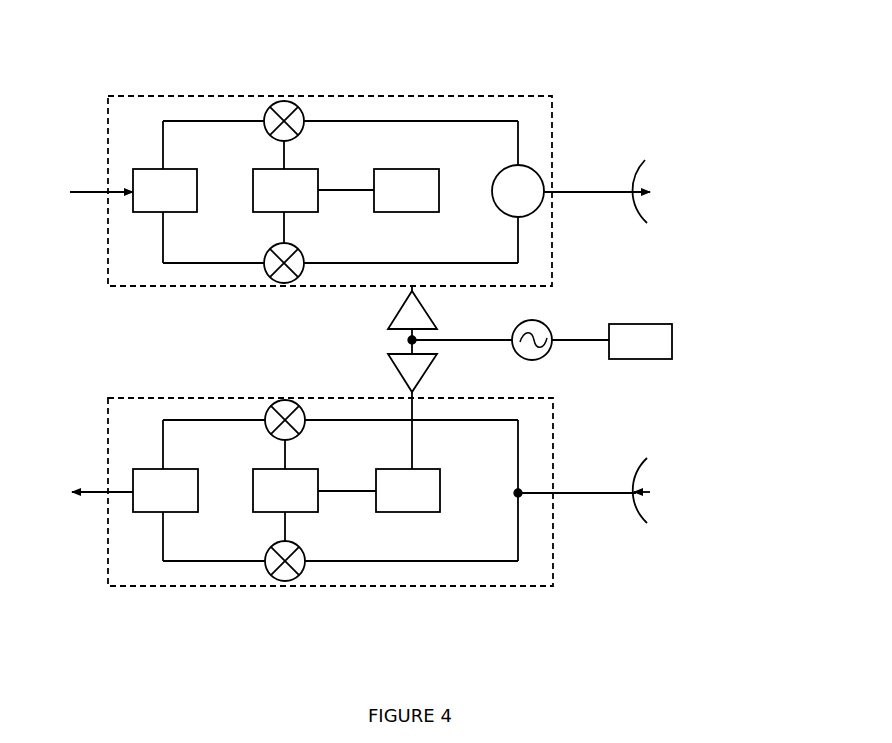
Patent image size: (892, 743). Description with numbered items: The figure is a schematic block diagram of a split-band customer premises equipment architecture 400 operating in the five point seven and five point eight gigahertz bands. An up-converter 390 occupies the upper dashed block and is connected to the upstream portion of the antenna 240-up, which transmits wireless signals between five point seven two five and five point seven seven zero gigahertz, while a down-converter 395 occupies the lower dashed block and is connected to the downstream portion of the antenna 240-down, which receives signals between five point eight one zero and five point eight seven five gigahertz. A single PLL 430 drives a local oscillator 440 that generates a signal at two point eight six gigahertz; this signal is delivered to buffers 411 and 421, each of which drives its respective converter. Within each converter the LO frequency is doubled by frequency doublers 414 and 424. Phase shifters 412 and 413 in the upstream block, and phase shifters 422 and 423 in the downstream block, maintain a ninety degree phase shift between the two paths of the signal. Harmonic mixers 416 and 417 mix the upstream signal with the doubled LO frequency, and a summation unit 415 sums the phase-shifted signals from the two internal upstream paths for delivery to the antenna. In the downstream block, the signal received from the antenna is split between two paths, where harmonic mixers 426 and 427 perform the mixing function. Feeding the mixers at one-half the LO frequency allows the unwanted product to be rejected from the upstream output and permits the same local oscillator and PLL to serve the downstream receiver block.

The transceiver front-end circuit 400 is at (67, 43).
The up-converter 390 is at (151, 96).
The down-converter 395 is at (151, 398).
The buffer 411 is at (400, 310).
The phase shifter 412 is at (176, 169).
The phase shifter 413 is at (304, 170).
The frequency doubler 414 is at (420, 170).
The summation unit 415 is at (508, 215).
The harmonic mixer 416 is at (298, 248).
The harmonic mixer 417 is at (272, 139).
The buffer 421 is at (400, 374).
The phase shifter 422 is at (176, 470).
The phase shifter 423 is at (304, 470).
The frequency doubler 424 is at (420, 470).
The harmonic mixer 426 is at (298, 547).
The harmonic mixer 427 is at (272, 438).
The PLL 430 is at (650, 325).
The local oscillator 440 is at (535, 358).
The upstream portion of antenna 240-up is at (632, 183).
The downstream portion of antenna 240-down is at (632, 484).